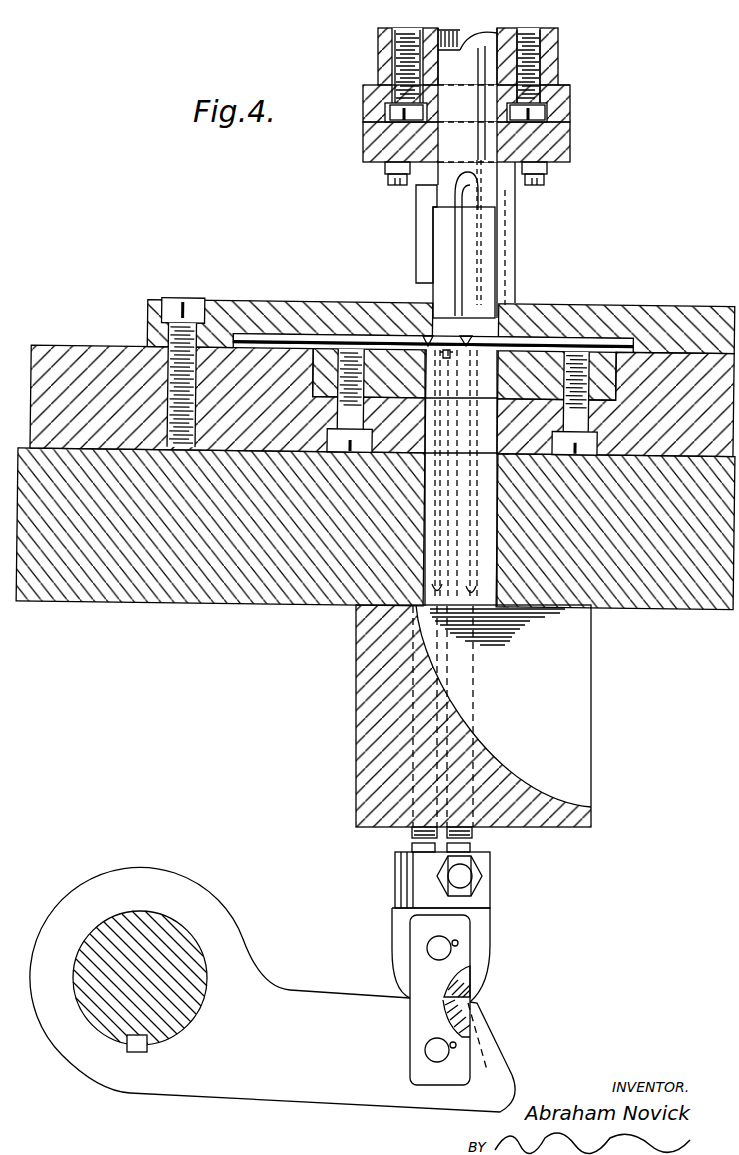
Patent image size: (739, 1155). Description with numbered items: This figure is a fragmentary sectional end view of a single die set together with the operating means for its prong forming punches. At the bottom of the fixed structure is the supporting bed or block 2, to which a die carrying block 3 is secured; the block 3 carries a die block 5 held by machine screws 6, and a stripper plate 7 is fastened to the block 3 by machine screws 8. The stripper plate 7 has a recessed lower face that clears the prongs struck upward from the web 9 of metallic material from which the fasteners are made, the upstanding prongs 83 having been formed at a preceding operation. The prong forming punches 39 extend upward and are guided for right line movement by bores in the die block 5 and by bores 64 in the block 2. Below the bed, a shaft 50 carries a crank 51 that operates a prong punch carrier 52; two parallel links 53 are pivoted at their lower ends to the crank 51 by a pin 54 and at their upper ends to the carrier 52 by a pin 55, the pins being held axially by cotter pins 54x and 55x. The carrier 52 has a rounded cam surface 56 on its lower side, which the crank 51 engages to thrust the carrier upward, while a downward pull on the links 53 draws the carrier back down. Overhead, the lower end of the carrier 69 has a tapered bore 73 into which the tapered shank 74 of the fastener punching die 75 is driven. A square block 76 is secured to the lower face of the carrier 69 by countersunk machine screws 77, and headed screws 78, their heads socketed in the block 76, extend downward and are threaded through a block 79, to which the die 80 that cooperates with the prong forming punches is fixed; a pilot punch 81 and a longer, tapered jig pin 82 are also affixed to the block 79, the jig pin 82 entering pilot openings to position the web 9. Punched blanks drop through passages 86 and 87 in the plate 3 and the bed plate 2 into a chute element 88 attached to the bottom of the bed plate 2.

The supporting bed or block 2 is at (194, 607).
The die carrying block 3 is at (98, 360).
The die block 5 is at (322, 348).
The machine screws 6 is at (462, 402).
The stripper plate 7 is at (253, 305).
The machine screws 8 is at (168, 312).
The web 9 is at (281, 334).
The prong forming punches 39 is at (437, 390).
The shaft 50 is at (133, 922).
The crank 51 is at (288, 995).
The prong punch carrier 52 is at (484, 923).
The parallel links 53 is at (462, 1066).
The pin 54 is at (425, 1051).
The cotter pin 54x is at (453, 1048).
The pin 55 is at (427, 948).
The cotter pin 55x is at (458, 945).
The rounded cam surface 56 is at (470, 994).
The bores 64 is at (478, 593).
The carrier 69 is at (558, 45).
The tapered bore 73 is at (486, 32).
The tapered shank 74 is at (457, 54).
The fastener punching die 75 is at (488, 238).
The square block 76 is at (570, 100).
The countersunk machine screws 77 is at (548, 114).
The headed screws 78 is at (562, 90).
The block 79 is at (570, 149).
The die 80 is at (422, 228).
The pilot punch 81 is at (497, 288).
The jig pin 82 is at (505, 270).
The upstanding prongs 83 is at (431, 337).
The passage 86 is at (490, 448).
The passage 87 is at (497, 512).
The chute element 88 is at (560, 813).